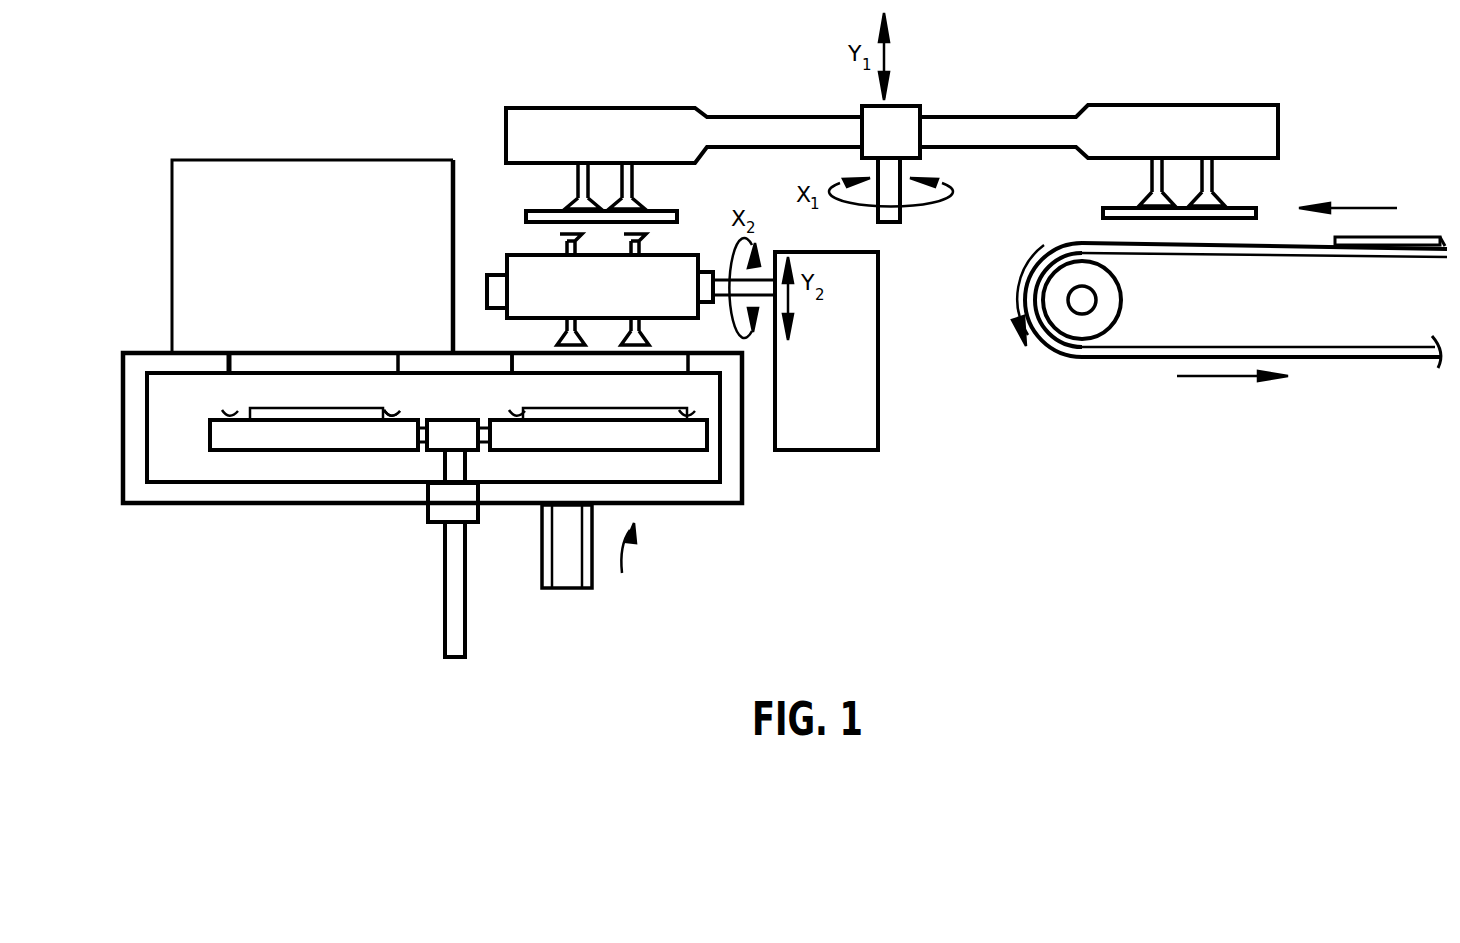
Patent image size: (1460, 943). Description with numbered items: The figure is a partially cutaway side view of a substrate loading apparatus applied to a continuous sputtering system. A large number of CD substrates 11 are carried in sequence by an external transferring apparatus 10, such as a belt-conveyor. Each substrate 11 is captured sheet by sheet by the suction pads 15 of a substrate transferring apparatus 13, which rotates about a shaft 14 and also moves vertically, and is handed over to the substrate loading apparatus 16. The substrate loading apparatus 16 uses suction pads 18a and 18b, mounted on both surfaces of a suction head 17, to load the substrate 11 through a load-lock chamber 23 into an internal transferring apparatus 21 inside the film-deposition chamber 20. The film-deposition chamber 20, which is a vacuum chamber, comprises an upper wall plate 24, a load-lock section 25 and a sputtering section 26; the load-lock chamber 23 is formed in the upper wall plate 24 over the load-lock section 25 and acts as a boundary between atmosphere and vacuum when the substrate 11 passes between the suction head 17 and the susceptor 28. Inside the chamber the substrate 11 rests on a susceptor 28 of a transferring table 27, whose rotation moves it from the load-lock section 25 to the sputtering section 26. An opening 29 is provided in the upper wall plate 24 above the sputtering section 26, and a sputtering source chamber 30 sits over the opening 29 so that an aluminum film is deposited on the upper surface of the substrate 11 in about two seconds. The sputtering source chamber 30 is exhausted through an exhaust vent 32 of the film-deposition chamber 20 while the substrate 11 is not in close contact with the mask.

The external transferring apparatus 10 is at (1140, 358).
The substrate 11 is at (672, 207).
The substrate transferring apparatus 13 is at (1008, 116).
The shaft 14 is at (886, 214).
The suction pads 15 is at (580, 181).
The substrate loading apparatus 16 is at (872, 312).
The suction head 17 is at (682, 252).
The suction pad 18a is at (562, 236).
The suction pad 18b is at (560, 333).
The film-deposition chamber 20 is at (641, 554).
The internal transferring apparatus 21 is at (410, 458).
The load-lock chamber 23 is at (632, 357).
The upper wall plate 24 is at (150, 352).
The load-lock section 25 is at (693, 470).
The sputtering section 26 is at (272, 465).
The transferring table 27 is at (227, 440).
The susceptor 28 is at (400, 415).
The opening 29 is at (350, 366).
The sputtering source chamber 30 is at (283, 176).
The exhaust vent 32 is at (542, 535).